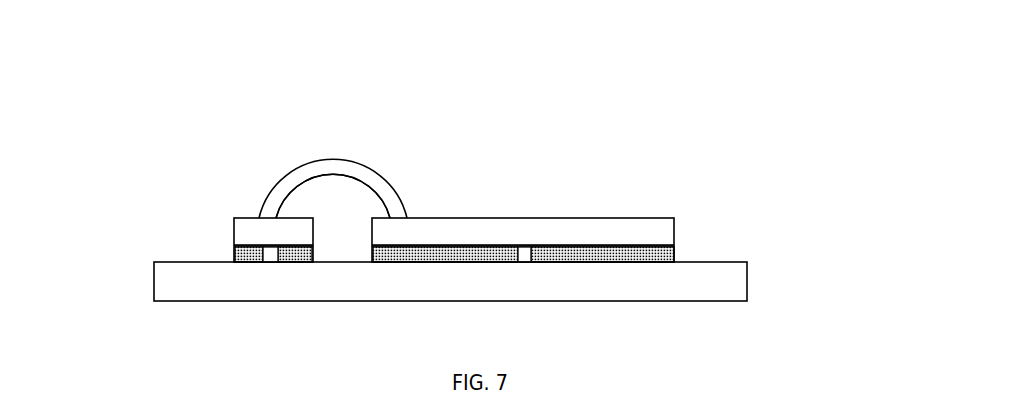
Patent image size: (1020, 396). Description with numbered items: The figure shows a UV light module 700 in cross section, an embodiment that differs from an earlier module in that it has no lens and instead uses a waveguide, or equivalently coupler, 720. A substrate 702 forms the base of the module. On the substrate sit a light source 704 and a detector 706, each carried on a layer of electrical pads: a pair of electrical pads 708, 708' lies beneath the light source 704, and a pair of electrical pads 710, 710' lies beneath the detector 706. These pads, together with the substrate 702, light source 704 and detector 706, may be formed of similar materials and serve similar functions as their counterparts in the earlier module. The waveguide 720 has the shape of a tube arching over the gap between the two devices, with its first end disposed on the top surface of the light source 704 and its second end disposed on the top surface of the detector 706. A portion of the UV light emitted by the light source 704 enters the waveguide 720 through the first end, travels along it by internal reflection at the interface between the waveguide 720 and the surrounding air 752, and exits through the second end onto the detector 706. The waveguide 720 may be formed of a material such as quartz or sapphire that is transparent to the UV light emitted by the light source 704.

The UV light module 700 is at (103, 52).
The substrate 702 is at (735, 277).
The light source 704 is at (674, 234).
The detector 706 is at (234, 243).
The electrical pad 708 is at (463, 193).
The electrical pad 708' is at (602, 190).
The electrical pad 710 is at (206, 310).
The electrical pad 710' is at (279, 316).
The waveguide 720 is at (308, 160).
The air 752 is at (417, 134).